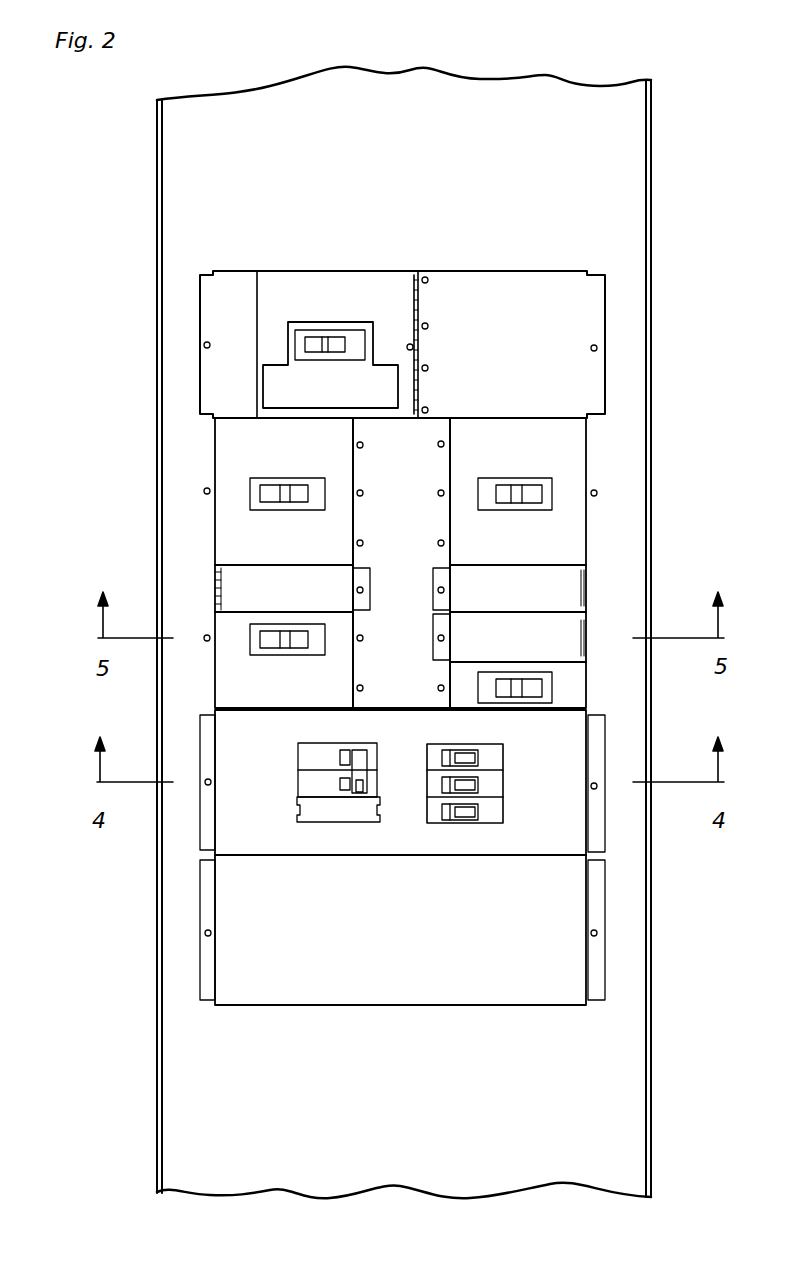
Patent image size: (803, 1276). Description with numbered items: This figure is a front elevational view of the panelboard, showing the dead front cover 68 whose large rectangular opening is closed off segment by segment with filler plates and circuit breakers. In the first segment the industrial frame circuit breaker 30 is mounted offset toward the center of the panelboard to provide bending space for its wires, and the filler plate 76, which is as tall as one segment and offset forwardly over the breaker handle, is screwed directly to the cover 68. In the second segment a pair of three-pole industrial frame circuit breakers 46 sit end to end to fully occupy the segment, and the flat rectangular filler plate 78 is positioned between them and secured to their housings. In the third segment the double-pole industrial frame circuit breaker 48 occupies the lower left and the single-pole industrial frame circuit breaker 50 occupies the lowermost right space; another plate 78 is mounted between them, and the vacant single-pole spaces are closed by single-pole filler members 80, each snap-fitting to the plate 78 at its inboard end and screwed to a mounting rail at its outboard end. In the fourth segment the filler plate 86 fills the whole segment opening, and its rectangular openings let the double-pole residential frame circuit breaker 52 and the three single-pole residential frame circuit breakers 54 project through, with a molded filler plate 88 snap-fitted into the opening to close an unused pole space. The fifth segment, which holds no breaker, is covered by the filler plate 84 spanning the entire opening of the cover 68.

The dead front cover 68 is at (620, 1078).
The filler plate 76 is at (533, 283).
The industrial frame circuit breaker 30 is at (275, 383).
The industrial frame circuit breakers 46 is at (665, 438).
The filler plate 78 is at (414, 486).
The single-pole filler member 80 is at (668, 577).
The double-pole industrial frame circuit breaker 48 is at (237, 683).
The single-pole industrial frame circuit breaker 50 is at (580, 697).
The filler plate 86 is at (237, 813).
The double-pole residential frame circuit breaker 52 is at (315, 752).
The molded filler plate 88 is at (324, 810).
The single-pole residential frame circuit breakers 54 is at (497, 760).
The filler plate 84 is at (330, 985).